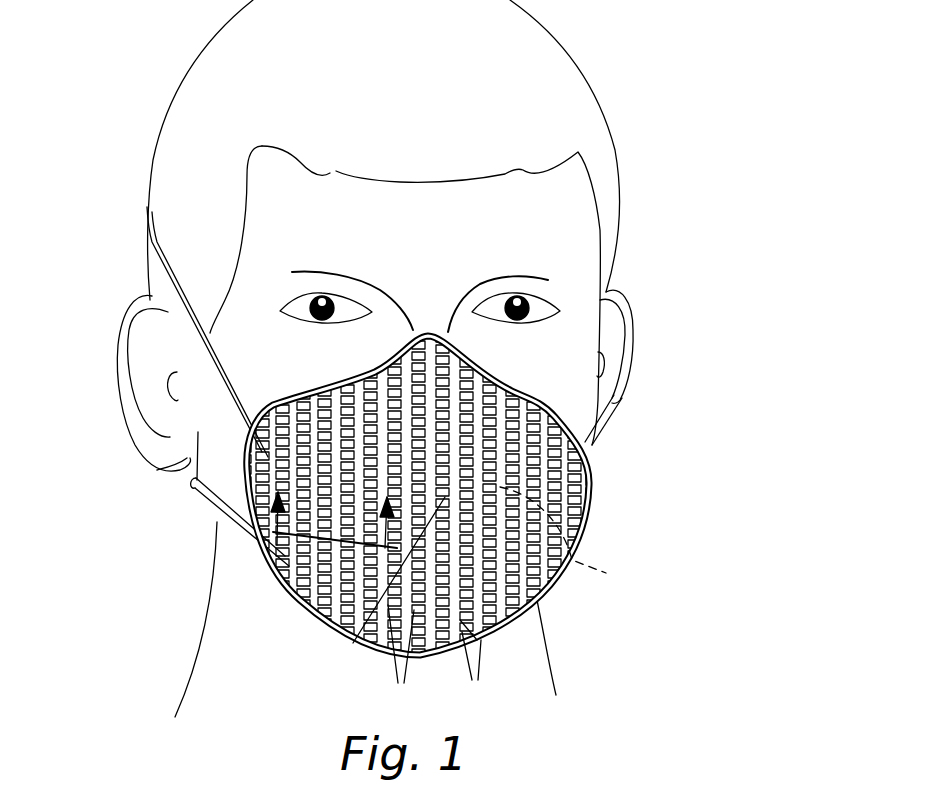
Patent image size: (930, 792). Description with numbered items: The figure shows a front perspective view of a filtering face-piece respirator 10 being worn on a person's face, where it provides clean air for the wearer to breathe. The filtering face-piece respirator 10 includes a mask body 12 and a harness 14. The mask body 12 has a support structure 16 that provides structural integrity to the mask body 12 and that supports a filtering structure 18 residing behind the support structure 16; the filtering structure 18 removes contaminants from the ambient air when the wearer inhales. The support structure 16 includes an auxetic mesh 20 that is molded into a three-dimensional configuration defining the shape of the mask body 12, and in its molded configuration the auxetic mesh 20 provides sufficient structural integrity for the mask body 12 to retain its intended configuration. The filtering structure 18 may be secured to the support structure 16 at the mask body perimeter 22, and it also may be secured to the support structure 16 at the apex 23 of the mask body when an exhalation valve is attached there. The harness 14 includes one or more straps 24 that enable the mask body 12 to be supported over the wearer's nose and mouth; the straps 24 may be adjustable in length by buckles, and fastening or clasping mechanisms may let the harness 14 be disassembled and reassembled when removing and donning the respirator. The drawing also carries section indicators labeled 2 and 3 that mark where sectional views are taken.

The filtering face-piece respirator 10 is at (461, 528).
The mask body 12 is at (556, 598).
The harness 14 is at (188, 498).
The support structure 16 is at (578, 440).
The filtering structure 18 is at (474, 665).
The auxetic mesh 20 is at (401, 657).
The mask body perimeter 22 is at (305, 607).
The apex 23 is at (395, 620).
The straps 24 is at (147, 214).
The section line 2- 2 is at (564, 538).
The section line 3- 3 is at (379, 474).